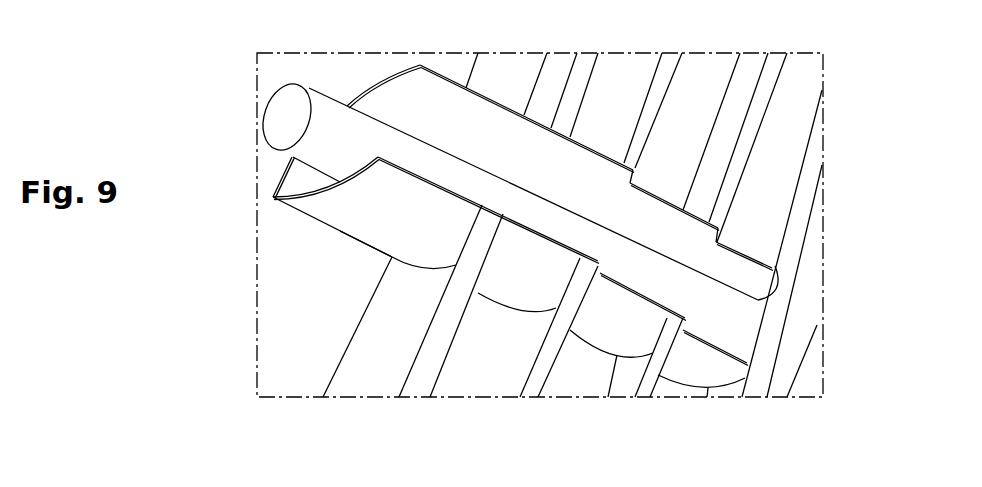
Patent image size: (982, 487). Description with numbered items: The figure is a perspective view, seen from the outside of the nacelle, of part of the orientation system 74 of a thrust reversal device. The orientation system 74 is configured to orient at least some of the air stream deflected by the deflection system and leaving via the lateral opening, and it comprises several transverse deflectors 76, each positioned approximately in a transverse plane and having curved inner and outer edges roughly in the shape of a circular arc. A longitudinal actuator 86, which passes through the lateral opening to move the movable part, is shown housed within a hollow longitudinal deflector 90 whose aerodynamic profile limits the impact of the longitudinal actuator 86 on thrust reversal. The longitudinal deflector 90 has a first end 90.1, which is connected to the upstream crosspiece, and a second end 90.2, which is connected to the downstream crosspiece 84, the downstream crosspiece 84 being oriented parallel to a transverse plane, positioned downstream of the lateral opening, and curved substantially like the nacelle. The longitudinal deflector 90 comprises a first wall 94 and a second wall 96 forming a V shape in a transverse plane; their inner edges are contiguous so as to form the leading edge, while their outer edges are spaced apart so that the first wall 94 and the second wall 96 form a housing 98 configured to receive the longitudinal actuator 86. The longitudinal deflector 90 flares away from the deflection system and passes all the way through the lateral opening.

The orientation system 74 is at (793, 103).
The transverse deflector 76 is at (617, 377).
The downstream crosspiece 84 is at (800, 295).
The longitudinal actuator 86 is at (287, 92).
The longitudinal deflector 90 is at (331, 226).
The first end 90.1 is at (281, 201).
The second end 90.2 is at (785, 250).
The first wall 94 is at (477, 133).
The second wall 96 is at (366, 243).
The housing 98 is at (563, 192).